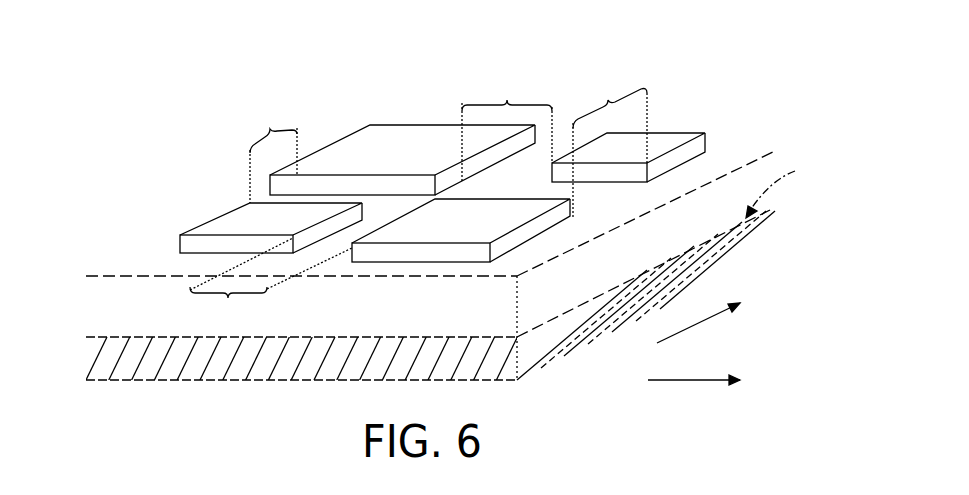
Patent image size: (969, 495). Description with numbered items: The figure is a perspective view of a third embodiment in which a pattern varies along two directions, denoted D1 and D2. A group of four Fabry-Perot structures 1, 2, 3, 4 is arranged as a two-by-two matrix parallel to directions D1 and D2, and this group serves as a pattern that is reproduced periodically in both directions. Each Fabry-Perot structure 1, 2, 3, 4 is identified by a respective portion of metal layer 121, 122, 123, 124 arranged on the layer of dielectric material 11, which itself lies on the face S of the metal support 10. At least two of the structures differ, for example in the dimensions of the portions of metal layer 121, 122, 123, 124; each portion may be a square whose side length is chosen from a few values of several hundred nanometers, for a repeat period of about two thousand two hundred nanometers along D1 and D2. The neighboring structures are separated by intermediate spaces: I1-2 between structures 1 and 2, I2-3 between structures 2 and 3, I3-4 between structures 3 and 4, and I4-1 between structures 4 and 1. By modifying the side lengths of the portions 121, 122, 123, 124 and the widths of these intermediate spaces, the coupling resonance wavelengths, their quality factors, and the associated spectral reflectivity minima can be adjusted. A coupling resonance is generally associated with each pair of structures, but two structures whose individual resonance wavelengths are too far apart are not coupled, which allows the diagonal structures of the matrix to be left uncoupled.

The Fabry-Perot structure 1 is at (235, 228).
The Fabry-Perot structure 2 is at (432, 203).
The Fabry-Perot structure 3 is at (641, 140).
The Fabry-Perot structure 4 is at (432, 137).
The metal support 10 is at (67, 337).
The layer of dielectric material 11 is at (67, 276).
The portion of metal layer 121 is at (205, 233).
The portion of metal layer 122 is at (500, 222).
The portion of metal layer 123 is at (665, 147).
The portion of metal layer 124 is at (383, 143).
The intermediate space I4-1 is at (272, 152).
The intermediate space I3-4 is at (507, 124).
The intermediate space I2-3 is at (610, 142).
The intermediate space I1-2 is at (271, 289).
The face of the metal support S is at (780, 187).
The direction of variation D1 is at (716, 388).
The direction of variation D2 is at (721, 312).